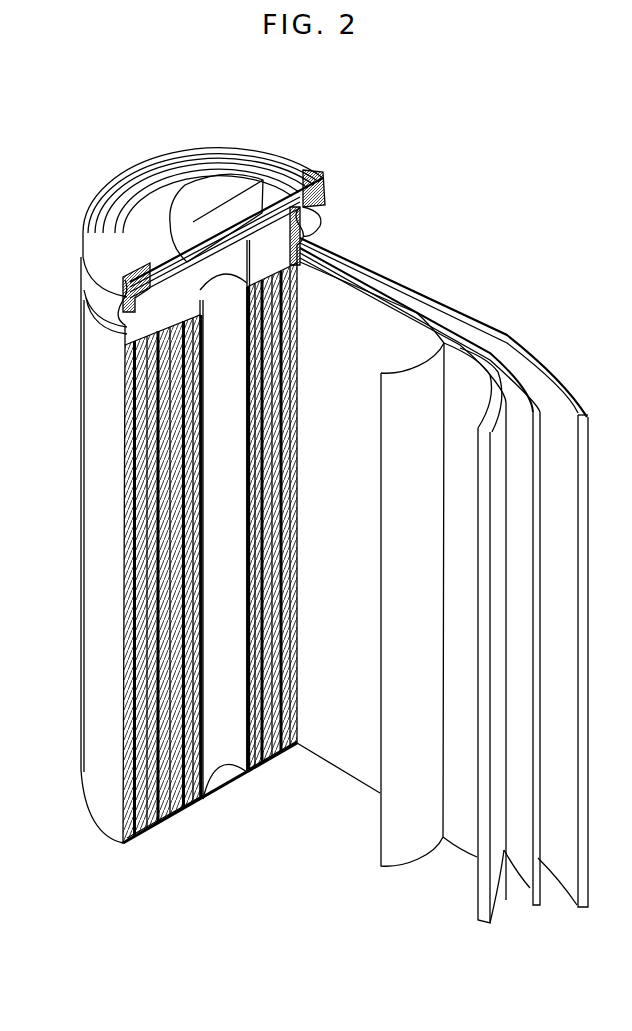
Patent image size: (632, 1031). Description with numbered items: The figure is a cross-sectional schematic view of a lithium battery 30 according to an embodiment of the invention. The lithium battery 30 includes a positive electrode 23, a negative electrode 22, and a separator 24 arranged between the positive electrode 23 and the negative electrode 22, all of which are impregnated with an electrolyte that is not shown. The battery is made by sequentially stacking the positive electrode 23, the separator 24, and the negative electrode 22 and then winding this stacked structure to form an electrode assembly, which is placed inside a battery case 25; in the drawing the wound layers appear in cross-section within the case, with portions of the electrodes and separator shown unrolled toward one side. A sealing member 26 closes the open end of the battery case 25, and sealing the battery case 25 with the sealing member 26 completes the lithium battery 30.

The lithium battery 30 is at (282, 92).
The negative electrode 22 is at (565, 387).
The positive electrode 23 is at (493, 380).
The separator 24 is at (410, 375).
The battery case 25 is at (82, 540).
The sealing member 26 is at (198, 192).